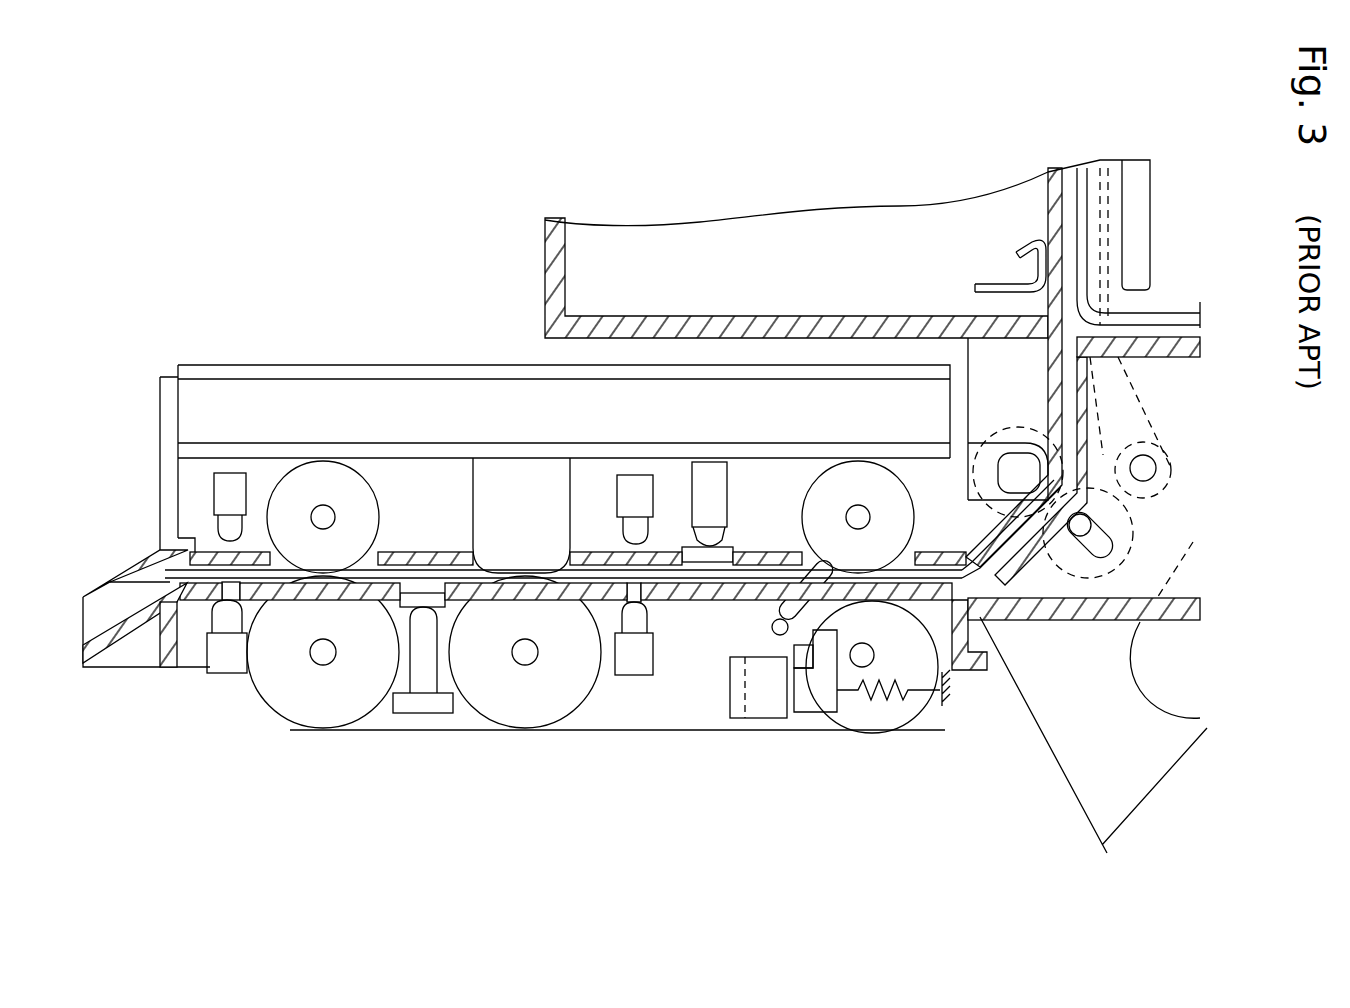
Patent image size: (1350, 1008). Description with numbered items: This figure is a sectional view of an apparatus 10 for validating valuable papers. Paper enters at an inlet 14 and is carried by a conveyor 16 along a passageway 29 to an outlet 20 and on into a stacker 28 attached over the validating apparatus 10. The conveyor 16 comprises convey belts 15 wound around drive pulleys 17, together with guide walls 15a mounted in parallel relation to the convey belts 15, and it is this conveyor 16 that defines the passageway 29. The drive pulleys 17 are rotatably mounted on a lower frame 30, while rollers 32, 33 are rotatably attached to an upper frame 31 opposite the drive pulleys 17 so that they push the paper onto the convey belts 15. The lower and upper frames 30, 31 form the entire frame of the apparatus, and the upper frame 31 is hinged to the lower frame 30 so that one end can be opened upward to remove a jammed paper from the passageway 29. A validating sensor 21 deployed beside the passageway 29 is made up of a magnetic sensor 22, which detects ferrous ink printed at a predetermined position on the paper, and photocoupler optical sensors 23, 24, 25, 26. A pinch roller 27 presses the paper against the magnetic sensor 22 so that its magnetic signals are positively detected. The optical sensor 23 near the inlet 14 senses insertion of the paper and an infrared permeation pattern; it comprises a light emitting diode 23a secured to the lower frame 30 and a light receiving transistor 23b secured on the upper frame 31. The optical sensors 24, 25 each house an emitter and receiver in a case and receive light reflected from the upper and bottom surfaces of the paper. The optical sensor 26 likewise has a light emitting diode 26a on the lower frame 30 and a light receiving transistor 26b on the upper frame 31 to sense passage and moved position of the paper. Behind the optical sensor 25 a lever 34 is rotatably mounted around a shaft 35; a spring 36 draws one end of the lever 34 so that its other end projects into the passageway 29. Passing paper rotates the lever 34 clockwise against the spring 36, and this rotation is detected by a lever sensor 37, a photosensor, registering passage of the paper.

The apparatus for validating valuable papers 10 is at (298, 340).
The inlet 14 is at (105, 600).
The convey belts 15 is at (592, 733).
The guide walls 15a is at (363, 600).
The conveyor 16 is at (493, 733).
The drive pulleys 17 is at (308, 703).
The outlet 20 is at (1037, 613).
The validating sensor 21 is at (548, 485).
The magnetic sensor 22 is at (490, 487).
The optical sensor 23 is at (197, 506).
The light emitting diode 23a is at (223, 655).
The light receiving transistor 23b is at (232, 487).
The optical sensor 24 is at (422, 675).
The optical sensor 25 is at (708, 495).
The optical sensor 26 is at (663, 488).
The light emitting diode 26a is at (636, 657).
The light receiving transistor 26b is at (628, 490).
The pinch roller 27 is at (525, 722).
The stacker 28 is at (945, 212).
The passageway 29 is at (412, 578).
The lower frame 30 is at (137, 668).
The upper frame 31 is at (166, 378).
The roller 32 is at (327, 497).
The roller 33 is at (858, 500).
The lever 34 is at (803, 705).
The shaft 35 is at (771, 627).
The spring 36 is at (880, 708).
The lever sensor 37 is at (768, 714).